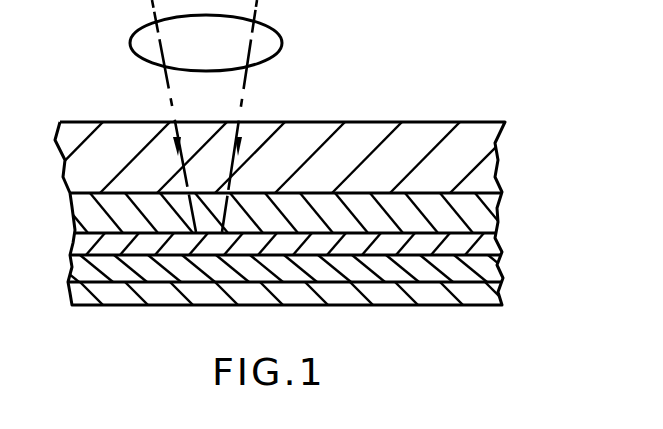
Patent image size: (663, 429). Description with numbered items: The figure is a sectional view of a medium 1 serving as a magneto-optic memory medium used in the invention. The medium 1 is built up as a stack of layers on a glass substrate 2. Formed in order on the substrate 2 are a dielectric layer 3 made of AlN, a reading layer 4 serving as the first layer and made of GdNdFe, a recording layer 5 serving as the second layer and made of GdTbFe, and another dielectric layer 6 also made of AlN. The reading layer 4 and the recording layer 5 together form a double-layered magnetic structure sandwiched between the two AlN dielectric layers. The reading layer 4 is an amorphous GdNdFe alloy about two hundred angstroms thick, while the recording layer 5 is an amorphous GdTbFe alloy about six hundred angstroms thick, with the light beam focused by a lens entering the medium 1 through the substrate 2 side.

The medium 1 is at (452, 101).
The glass substrate 2 is at (478, 145).
The dielectric layer 3 is at (487, 208).
The reading layer 4 is at (483, 242).
The recording layer 5 is at (487, 265).
The another dielectric layer 6 is at (485, 292).